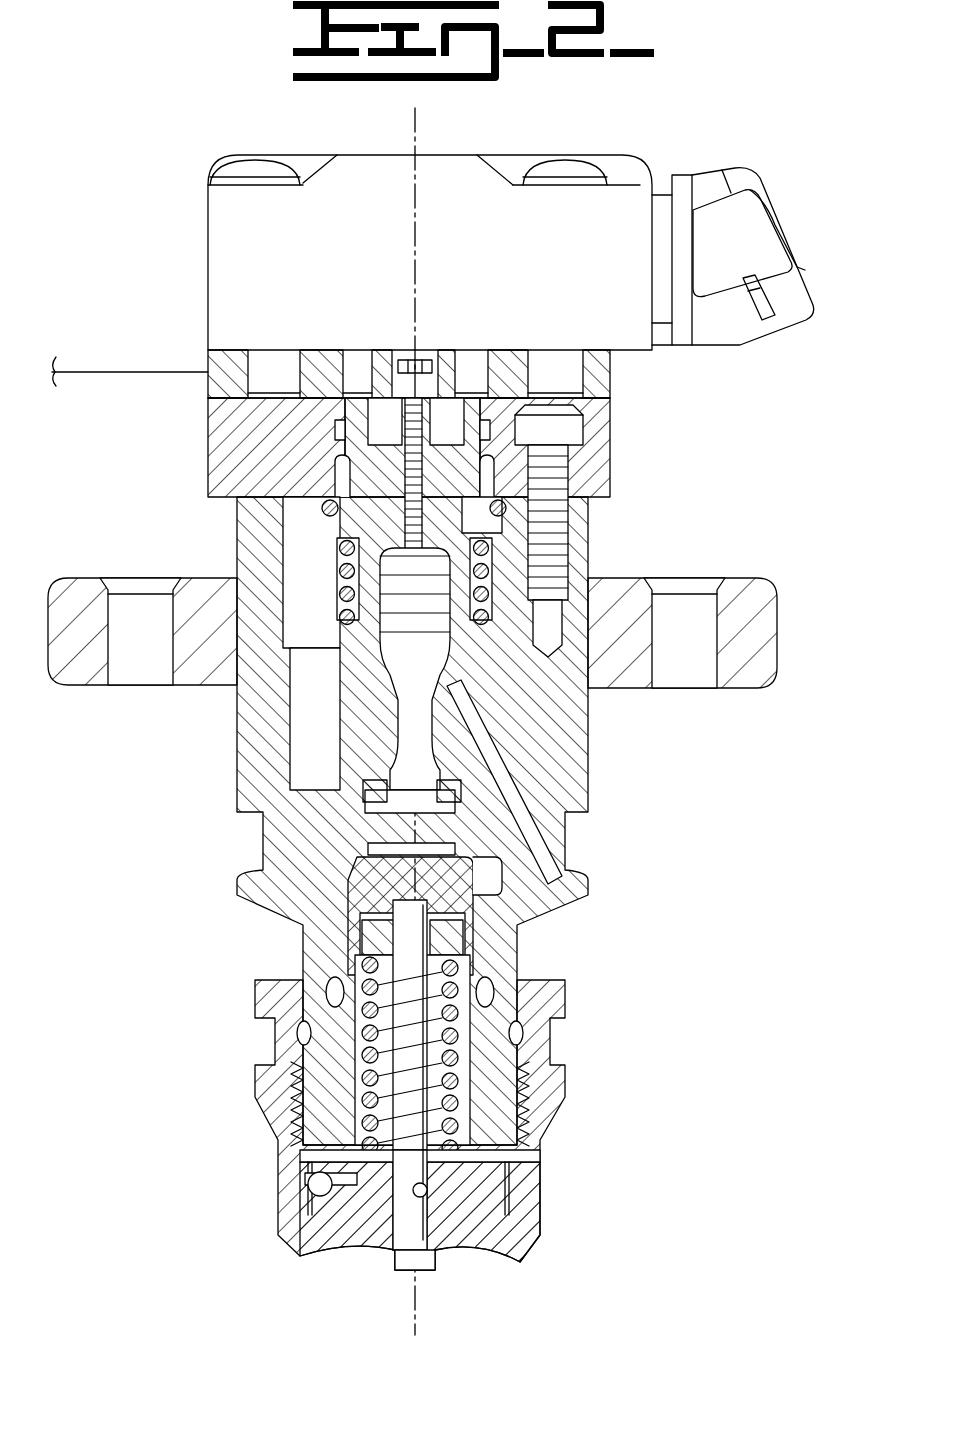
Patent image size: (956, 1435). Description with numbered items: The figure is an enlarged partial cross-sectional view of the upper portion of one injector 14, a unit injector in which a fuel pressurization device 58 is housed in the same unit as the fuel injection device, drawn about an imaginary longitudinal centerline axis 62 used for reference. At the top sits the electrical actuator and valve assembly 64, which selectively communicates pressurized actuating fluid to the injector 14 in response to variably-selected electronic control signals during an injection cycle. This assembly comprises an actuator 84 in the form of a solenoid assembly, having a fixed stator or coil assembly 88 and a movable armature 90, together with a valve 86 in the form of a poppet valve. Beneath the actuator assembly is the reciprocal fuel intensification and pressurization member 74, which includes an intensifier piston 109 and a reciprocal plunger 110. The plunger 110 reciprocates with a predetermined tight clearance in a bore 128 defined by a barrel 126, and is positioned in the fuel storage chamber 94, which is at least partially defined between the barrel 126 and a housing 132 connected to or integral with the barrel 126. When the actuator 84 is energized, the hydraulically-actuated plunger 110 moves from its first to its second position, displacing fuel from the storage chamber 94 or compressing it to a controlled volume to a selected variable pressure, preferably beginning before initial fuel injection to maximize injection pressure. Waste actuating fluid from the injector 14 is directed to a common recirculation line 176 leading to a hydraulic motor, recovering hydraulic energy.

The injector 14 is at (348, 213).
The longitudinal centerline axis 62 is at (418, 133).
The coil assembly 88 is at (205, 204).
The electrical actuator and valve assembly 64 is at (196, 302).
The armature 90 is at (512, 350).
The recirculation line 176 is at (127, 374).
The actuator 84 is at (655, 446).
The valve 86 is at (463, 754).
The fuel intensification and pressurization member 74 is at (514, 947).
The intensifier piston 109 is at (352, 948).
The fuel pressurization device 58 is at (505, 1123).
The housing 132 is at (566, 1080).
The plunger 110 is at (411, 1190).
The barrel 126 is at (479, 1229).
The storage chamber 94 is at (395, 1266).
The bore 128 is at (426, 1268).